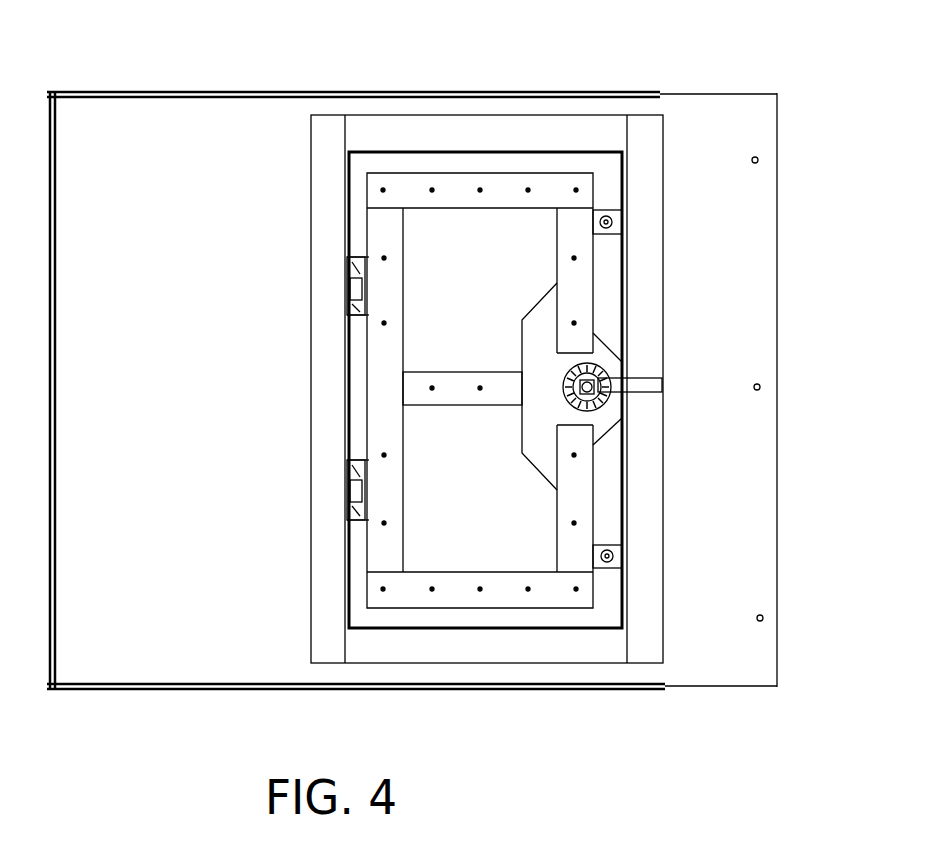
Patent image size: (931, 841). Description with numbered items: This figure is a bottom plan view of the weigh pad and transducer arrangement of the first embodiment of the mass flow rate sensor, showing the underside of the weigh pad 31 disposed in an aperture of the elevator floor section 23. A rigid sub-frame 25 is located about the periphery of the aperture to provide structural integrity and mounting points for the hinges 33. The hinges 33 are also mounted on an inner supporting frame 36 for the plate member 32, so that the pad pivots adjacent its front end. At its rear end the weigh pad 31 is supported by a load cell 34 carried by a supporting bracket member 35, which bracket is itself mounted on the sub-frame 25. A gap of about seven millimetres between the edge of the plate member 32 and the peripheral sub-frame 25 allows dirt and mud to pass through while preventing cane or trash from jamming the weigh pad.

The elevator floor section 23 is at (205, 259).
The rigid sub-frame 25 is at (331, 228).
The weigh pad 31 is at (497, 612).
The plate member 32 is at (490, 290).
The hinges 33 is at (347, 300).
The load cell 34 is at (603, 407).
The supporting bracket member 35 is at (642, 385).
The inner supporting frame 36 is at (528, 388).